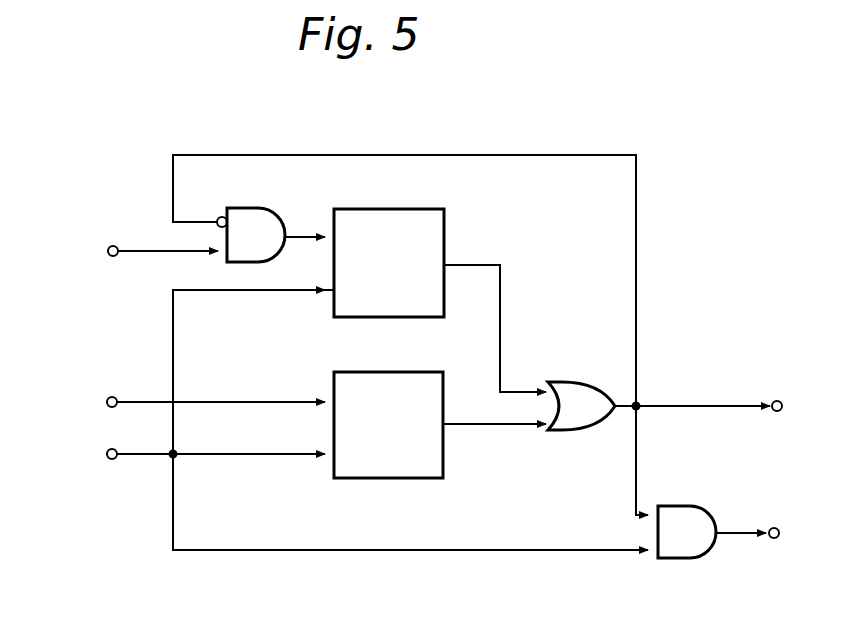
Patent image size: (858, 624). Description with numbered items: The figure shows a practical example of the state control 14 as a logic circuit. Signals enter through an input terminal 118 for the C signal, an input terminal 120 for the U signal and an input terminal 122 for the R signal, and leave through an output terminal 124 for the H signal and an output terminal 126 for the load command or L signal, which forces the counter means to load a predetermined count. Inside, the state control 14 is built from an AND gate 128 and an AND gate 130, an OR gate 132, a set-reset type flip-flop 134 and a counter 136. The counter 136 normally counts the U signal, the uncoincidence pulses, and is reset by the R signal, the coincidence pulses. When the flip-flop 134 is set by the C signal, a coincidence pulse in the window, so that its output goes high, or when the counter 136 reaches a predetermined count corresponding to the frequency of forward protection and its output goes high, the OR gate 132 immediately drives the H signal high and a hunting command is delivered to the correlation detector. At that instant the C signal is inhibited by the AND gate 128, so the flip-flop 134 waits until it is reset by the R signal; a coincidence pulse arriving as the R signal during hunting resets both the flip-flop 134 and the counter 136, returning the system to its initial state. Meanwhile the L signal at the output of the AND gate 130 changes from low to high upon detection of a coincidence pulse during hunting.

The state control 14 is at (680, 152).
The input terminal 118 is at (109, 249).
The input terminal 120 is at (106, 403).
The input terminal 122 is at (106, 455).
The output terminal 124 is at (780, 401).
The output terminal 126 is at (778, 529).
The AND gate 128 is at (256, 208).
The AND gate 130 is at (693, 506).
The OR gate 132 is at (574, 381).
The set-reset type flip-flop 134 is at (448, 217).
The counter 136 is at (385, 479).